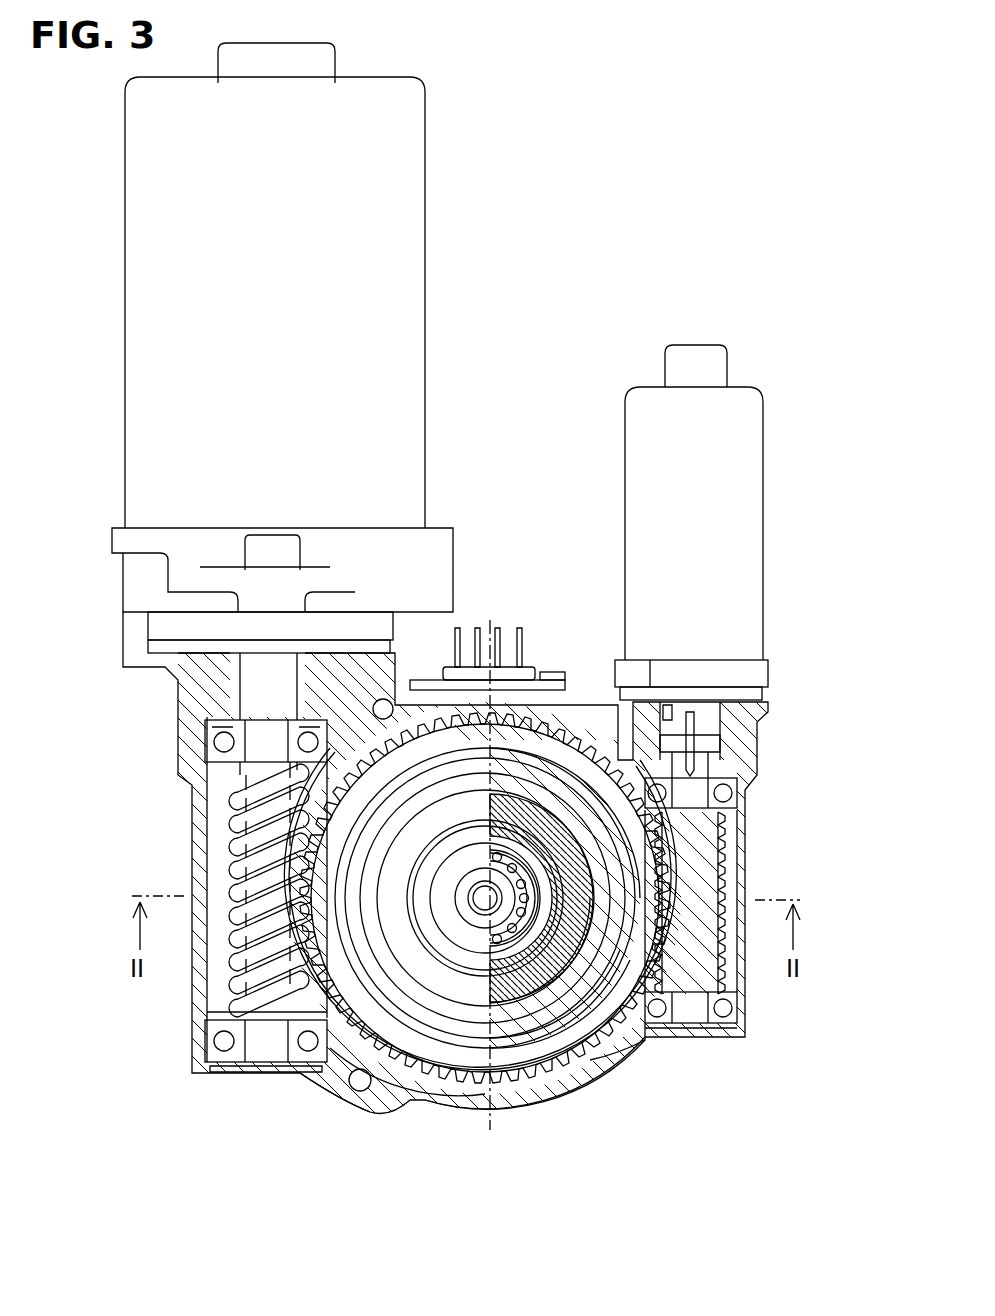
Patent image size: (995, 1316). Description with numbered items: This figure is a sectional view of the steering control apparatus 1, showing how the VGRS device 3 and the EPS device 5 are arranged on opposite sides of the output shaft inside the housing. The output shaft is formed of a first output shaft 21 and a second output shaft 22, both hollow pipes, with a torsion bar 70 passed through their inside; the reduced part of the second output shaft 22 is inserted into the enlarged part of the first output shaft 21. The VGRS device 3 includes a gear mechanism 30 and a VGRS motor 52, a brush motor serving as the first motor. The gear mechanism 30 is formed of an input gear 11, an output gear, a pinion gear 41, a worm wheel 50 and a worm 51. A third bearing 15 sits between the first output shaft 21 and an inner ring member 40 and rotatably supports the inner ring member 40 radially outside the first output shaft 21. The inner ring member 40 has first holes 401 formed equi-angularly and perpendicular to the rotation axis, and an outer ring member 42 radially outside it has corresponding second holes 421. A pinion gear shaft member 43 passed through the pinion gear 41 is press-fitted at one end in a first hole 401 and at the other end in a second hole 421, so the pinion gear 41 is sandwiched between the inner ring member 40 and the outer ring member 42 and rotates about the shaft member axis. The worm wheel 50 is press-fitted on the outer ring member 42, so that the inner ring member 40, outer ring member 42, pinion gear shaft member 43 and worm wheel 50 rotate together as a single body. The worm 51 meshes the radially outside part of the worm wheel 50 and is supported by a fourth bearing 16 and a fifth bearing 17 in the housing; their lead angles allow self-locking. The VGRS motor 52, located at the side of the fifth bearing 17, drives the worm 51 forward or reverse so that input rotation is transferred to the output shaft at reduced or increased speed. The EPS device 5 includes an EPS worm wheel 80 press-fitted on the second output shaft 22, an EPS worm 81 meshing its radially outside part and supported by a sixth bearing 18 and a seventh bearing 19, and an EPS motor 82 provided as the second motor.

The steering control apparatus 1 is at (277, 1118).
The VGRS device 3 is at (785, 485).
The EPS device 5 is at (112, 324).
The input gear 11 is at (540, 1045).
The third bearing 15 is at (440, 1095).
The fourth bearing 16 is at (725, 1012).
The fifth bearing 17 is at (725, 790).
The sixth bearing 18 is at (223, 1043).
The seventh bearing 19 is at (218, 745).
The first output shaft 21 is at (400, 1092).
The second output shaft 22 is at (432, 876).
The gear mechanism 30 is at (567, 745).
The inner ring member 40 is at (470, 935).
The pinion gear 41 is at (495, 1060).
The outer ring member 42 is at (622, 1045).
The pinion gear shaft member 43 is at (565, 1060).
The worm wheel 50 is at (640, 1035).
The worm 51 is at (715, 866).
The VGRS motor 52 is at (735, 548).
The torsion bar 70 is at (463, 900).
The EPS worm wheel 80 is at (245, 825).
The EPS worm 81 is at (230, 1015).
The EPS motor 82 is at (150, 407).
The first holes 401 is at (470, 760).
The second holes 421 is at (600, 1050).